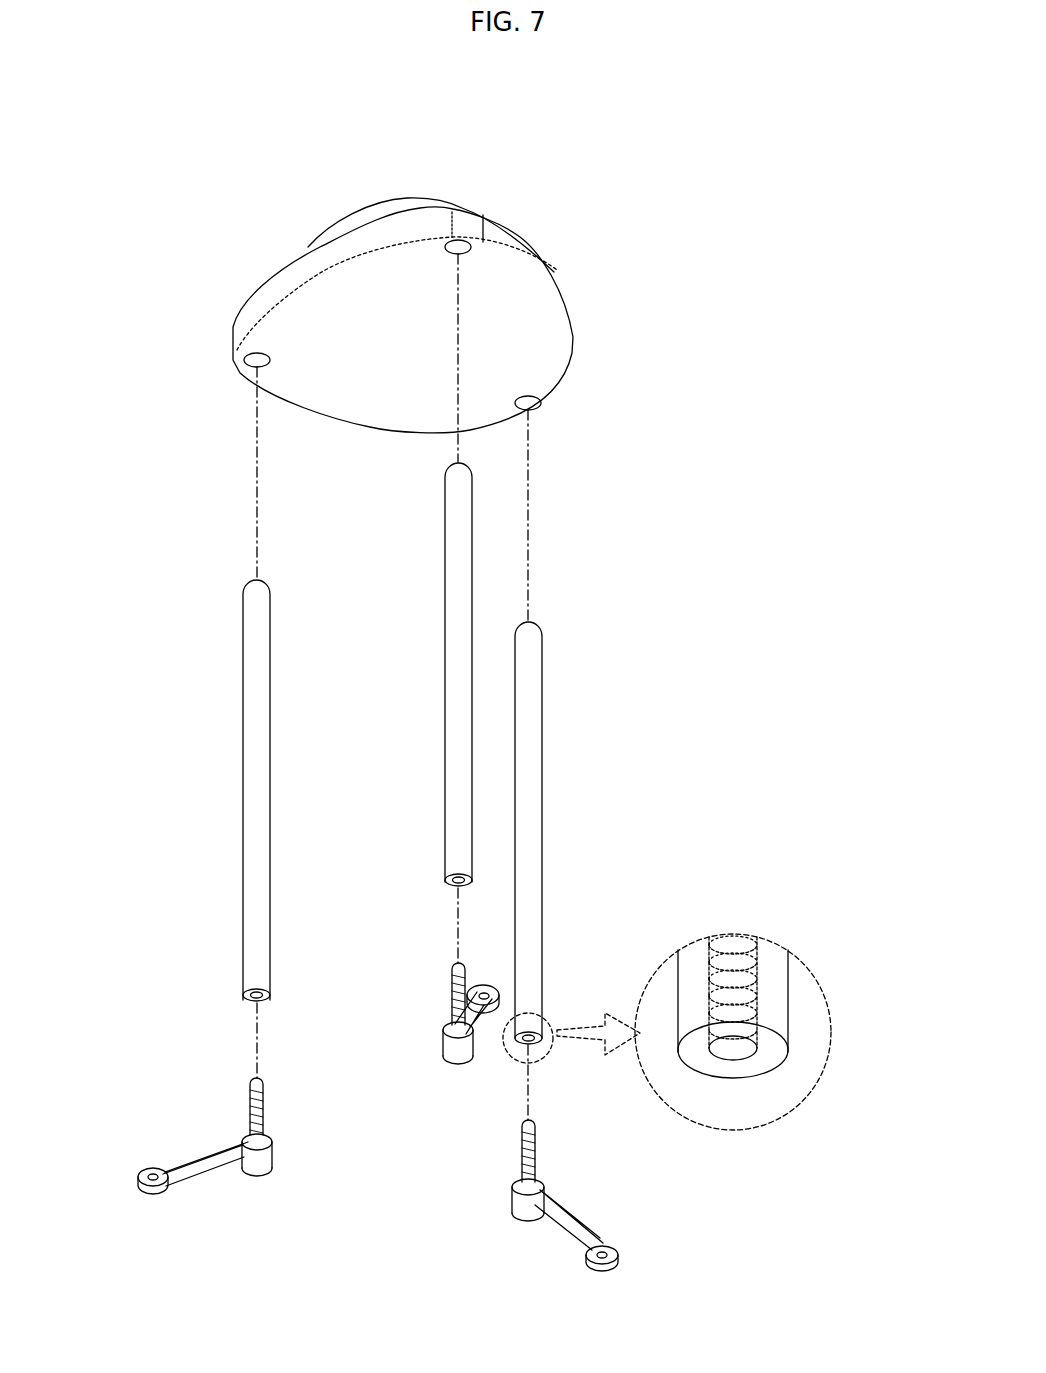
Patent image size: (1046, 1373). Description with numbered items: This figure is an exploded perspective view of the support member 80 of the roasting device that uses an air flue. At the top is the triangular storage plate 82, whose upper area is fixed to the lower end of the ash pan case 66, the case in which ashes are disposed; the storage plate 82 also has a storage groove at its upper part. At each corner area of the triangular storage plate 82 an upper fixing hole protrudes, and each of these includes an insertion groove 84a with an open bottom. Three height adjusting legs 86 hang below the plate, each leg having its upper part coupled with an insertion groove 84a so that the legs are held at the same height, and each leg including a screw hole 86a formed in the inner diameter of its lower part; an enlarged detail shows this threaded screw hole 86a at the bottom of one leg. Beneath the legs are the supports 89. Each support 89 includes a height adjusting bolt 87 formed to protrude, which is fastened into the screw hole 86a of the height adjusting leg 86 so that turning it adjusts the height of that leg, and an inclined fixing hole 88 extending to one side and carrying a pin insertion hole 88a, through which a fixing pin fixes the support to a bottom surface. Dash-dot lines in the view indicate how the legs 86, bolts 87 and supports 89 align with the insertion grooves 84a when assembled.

The support member 80 is at (208, 748).
The triangular storage plate 82 is at (557, 270).
The ash pan case 66 is at (363, 212).
The insertion groove 84a is at (466, 258).
The height adjusting leg 86 is at (445, 697).
The screw hole 86a is at (243, 1007).
The height adjusting bolt 87 is at (263, 1105).
The inclined fixing hole 88 is at (207, 1167).
The pin insertion hole 88a is at (153, 1190).
The support 89 is at (422, 1008).